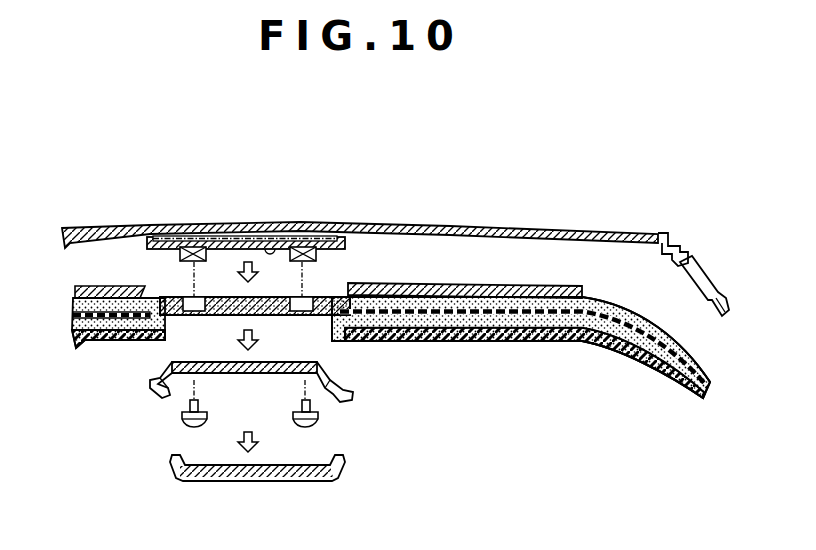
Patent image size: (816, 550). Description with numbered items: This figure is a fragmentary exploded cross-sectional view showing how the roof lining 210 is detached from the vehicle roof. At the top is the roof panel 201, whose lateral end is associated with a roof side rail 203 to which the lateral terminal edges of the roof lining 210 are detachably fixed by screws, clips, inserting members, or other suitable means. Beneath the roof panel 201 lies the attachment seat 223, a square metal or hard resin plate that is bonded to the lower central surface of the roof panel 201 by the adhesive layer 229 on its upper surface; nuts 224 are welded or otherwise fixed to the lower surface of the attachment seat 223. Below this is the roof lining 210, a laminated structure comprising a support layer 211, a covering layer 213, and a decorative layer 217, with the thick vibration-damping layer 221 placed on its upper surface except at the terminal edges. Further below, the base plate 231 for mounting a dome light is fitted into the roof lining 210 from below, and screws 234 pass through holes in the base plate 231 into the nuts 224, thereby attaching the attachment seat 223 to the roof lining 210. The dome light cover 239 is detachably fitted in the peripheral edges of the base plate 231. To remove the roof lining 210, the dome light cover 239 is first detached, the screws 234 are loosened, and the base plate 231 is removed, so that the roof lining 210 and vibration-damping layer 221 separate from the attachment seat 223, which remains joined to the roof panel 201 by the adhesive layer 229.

The roof panel 201 is at (320, 222).
The roof side rail 203 is at (702, 289).
The roof lining 210 is at (613, 300).
The support layer 211 is at (445, 343).
The covering layer 213 is at (207, 316).
The decorative layer 217 is at (573, 345).
The vibration-damping layer 221 is at (470, 284).
The attachment seat 223 is at (267, 240).
The nut 224 is at (158, 228).
The adhesive layer 229 is at (215, 238).
The base plate 231 is at (247, 374).
The screw 234 is at (182, 423).
The dome light cover 239 is at (265, 481).